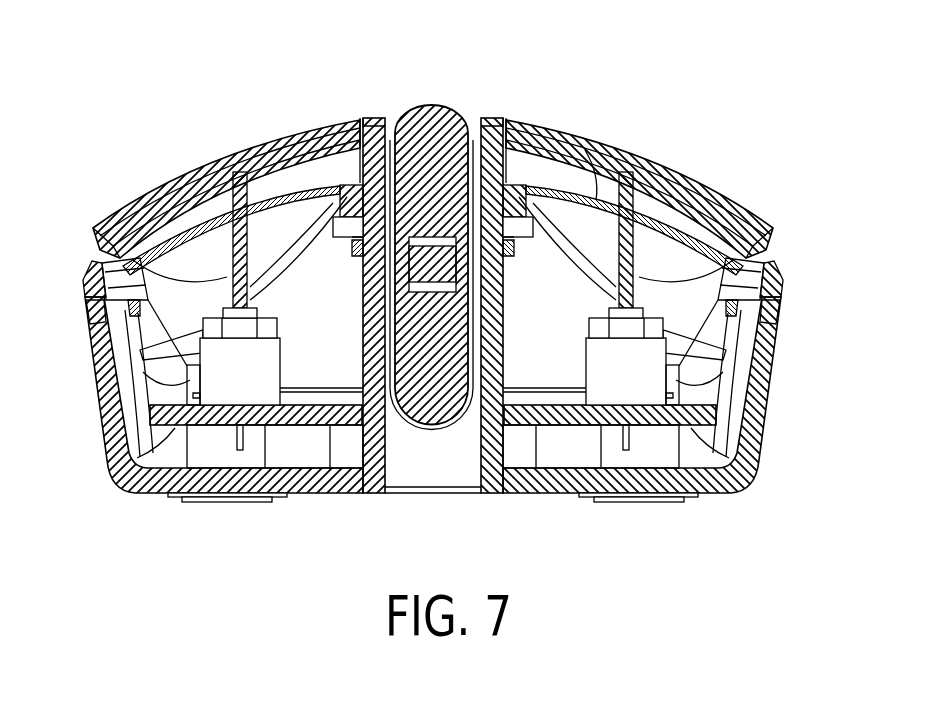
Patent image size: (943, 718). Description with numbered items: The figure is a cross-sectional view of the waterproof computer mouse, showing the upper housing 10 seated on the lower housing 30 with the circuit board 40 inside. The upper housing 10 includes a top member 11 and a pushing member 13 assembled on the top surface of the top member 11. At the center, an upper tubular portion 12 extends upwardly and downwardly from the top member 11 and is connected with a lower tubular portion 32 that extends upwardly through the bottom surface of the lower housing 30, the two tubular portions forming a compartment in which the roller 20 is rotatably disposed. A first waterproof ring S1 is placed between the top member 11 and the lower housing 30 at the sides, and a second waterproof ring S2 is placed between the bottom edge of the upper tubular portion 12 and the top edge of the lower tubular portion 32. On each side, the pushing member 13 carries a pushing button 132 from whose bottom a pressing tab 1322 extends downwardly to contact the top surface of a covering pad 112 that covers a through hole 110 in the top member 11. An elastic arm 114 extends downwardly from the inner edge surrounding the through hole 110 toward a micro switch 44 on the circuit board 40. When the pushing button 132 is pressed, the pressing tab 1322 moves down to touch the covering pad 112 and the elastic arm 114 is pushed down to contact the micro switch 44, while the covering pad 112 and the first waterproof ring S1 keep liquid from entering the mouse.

The upper housing 10 is at (105, 212).
The top member 11 is at (130, 283).
The upper tubular portion 12 is at (352, 178).
The pushing member 13 is at (207, 200).
The roller 20 is at (434, 103).
The lower housing 30 is at (147, 502).
The lower tubular portion 32 is at (380, 470).
The circuit board 40 is at (572, 428).
The micro switch 44 is at (648, 378).
The through hole 110 is at (745, 242).
The covering pad 112 is at (663, 225).
The elastic arm 114 is at (700, 236).
The pushing button 132 is at (620, 152).
The pressing tab 1322 is at (594, 152).
The first waterproof ring S1 is at (95, 324).
The second waterproof ring S2 is at (368, 258).